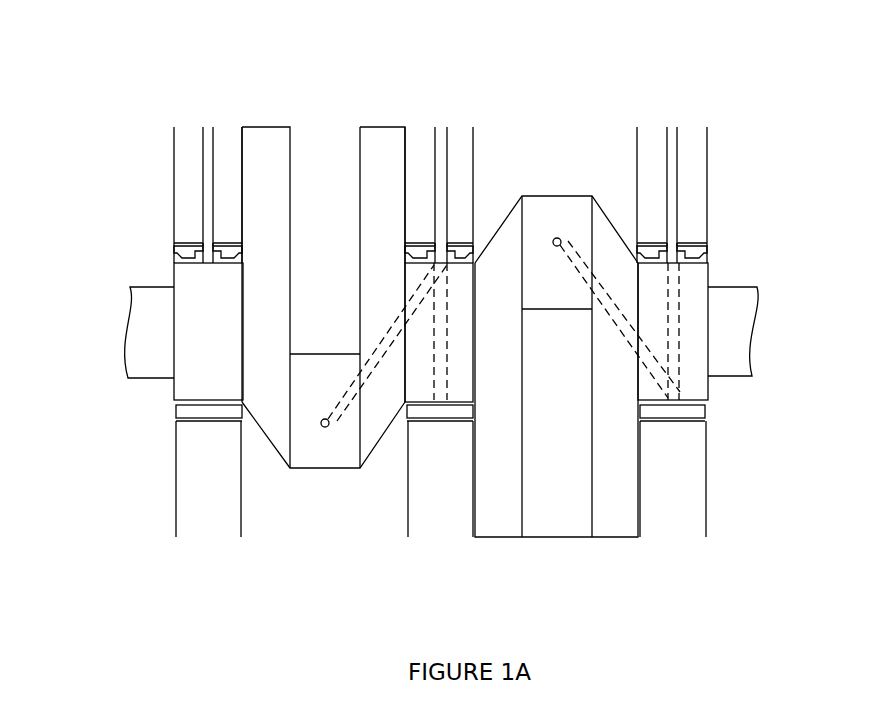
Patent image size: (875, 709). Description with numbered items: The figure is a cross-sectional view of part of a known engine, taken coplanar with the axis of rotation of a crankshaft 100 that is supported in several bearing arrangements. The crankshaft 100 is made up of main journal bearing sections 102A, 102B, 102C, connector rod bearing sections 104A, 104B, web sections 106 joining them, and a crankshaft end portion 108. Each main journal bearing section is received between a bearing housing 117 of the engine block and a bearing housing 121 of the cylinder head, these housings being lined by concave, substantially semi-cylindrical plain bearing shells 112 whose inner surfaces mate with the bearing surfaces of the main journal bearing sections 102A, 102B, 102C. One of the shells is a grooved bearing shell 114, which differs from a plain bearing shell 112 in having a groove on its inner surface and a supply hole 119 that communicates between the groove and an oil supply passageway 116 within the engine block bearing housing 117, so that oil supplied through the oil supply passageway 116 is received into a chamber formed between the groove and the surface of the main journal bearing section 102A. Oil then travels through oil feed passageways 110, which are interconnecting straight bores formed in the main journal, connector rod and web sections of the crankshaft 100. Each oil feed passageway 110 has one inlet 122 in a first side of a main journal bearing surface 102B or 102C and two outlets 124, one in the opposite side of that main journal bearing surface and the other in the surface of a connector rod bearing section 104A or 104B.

The crankshaft 100 is at (134, 120).
The main journal bearing section 102A is at (192, 377).
The main journal bearing section 102B is at (430, 390).
The main journal bearing section 102C is at (700, 379).
The connector rod bearing section 104A is at (308, 457).
The connector rod bearing section 104B is at (563, 207).
The web section 106 is at (378, 138).
The crankshaft end portion 108 is at (152, 333).
The oil feed passageway 110 is at (348, 398).
The plain bearing shell 112 is at (190, 415).
The grooved bearing shell 114 is at (173, 250).
The oil supply passageway 116 is at (438, 147).
The bearing housing 117 is at (455, 157).
The supply hole 119 is at (438, 246).
The bearing housing 121 is at (198, 490).
The inlet 122 is at (440, 402).
The outlet 124 is at (437, 262).